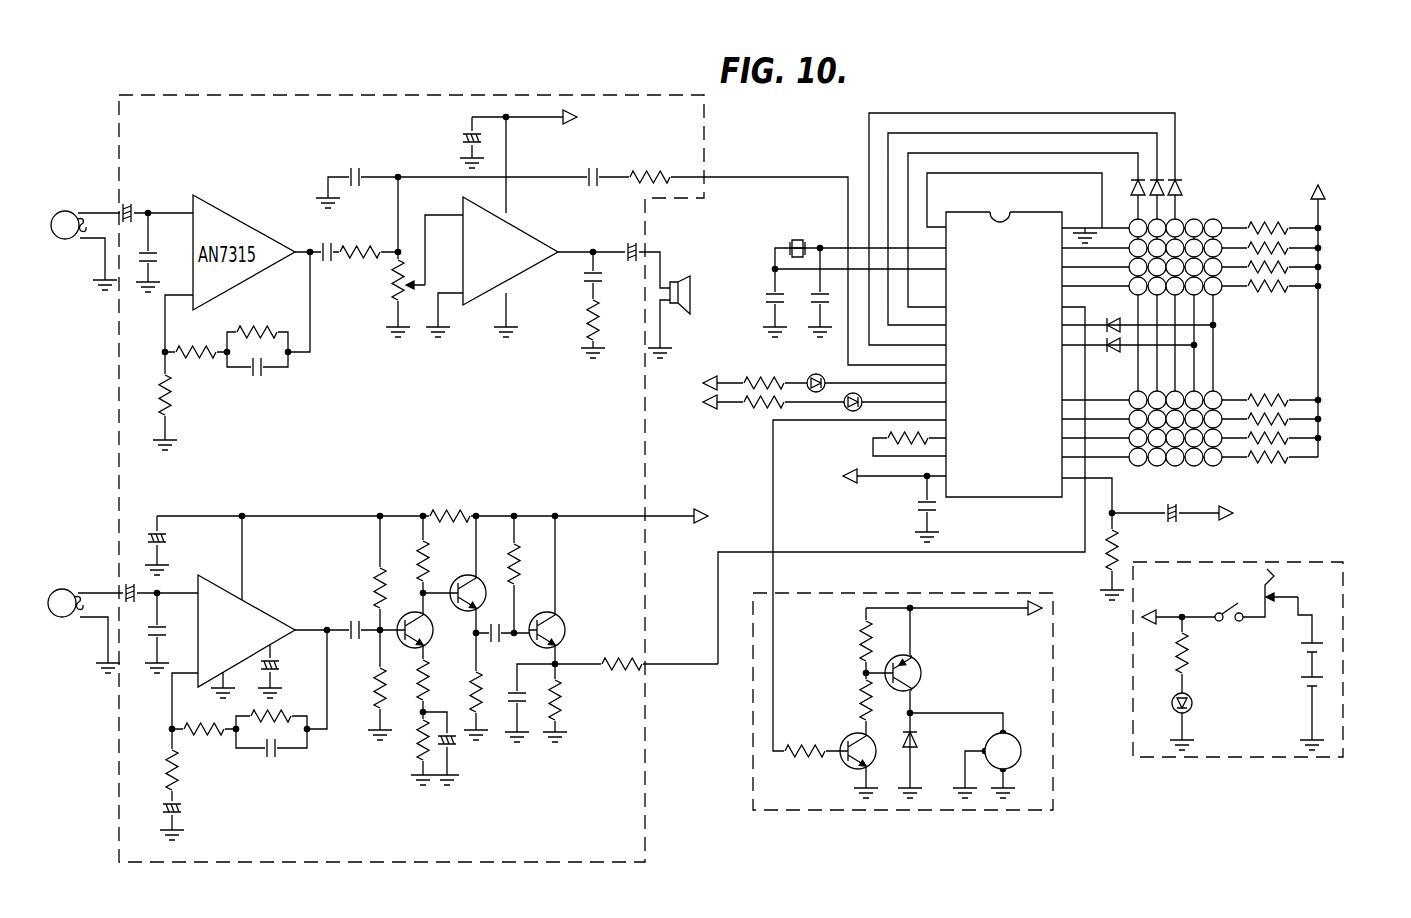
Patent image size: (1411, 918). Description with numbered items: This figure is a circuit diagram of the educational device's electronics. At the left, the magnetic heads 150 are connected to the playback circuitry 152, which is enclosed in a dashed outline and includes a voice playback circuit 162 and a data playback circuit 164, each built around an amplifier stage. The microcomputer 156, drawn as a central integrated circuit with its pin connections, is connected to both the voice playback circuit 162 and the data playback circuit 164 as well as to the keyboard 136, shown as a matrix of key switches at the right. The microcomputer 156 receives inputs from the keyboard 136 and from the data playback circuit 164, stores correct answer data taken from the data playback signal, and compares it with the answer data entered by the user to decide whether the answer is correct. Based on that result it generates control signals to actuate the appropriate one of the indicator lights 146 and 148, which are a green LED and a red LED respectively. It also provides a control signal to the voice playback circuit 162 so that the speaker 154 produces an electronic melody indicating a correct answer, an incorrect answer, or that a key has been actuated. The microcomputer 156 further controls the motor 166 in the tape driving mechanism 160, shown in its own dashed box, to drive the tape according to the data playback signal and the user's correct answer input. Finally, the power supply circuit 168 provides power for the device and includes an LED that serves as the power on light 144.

The keyboard 136 is at (1262, 468).
The power on light 144 is at (1193, 702).
The indicator light 146 is at (810, 373).
The indicator light 148 is at (848, 411).
The magnetic heads 150 is at (64, 239).
The playback circuitry 152 is at (442, 95).
The speaker 154 is at (687, 277).
The microcomputer 156 is at (999, 215).
The tape driving mechanism 160 is at (1053, 773).
The voice playback circuit 162 is at (434, 367).
The data playback circuit 164 is at (318, 488).
The motor 166 is at (1012, 737).
The power supply circuit 168 is at (1343, 576).